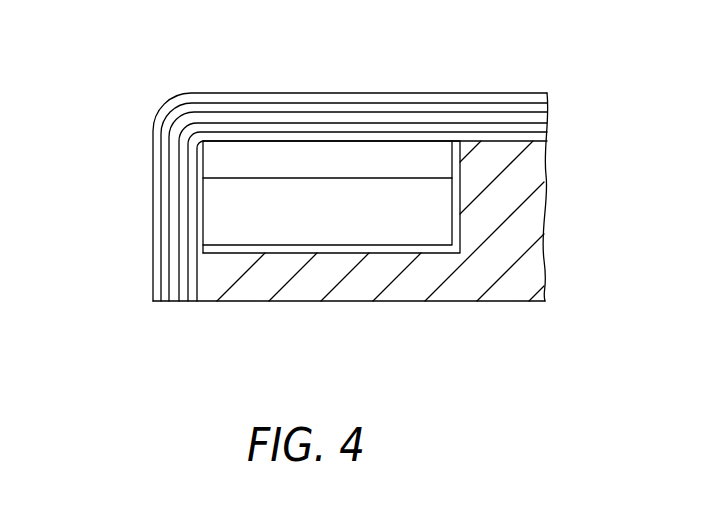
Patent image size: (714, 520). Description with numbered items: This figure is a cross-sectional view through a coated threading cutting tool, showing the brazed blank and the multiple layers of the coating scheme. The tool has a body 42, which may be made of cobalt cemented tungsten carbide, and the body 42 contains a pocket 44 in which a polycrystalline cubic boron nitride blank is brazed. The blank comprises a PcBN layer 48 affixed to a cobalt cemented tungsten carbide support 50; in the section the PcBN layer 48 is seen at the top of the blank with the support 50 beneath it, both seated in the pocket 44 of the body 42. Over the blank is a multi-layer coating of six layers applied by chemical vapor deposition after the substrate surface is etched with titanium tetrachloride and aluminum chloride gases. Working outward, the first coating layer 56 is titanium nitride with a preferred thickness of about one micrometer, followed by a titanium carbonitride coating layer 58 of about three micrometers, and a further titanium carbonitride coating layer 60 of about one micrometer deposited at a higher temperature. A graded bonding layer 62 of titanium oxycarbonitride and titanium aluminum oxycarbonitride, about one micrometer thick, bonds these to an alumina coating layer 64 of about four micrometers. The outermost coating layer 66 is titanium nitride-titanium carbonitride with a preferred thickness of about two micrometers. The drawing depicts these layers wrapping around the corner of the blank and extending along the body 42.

The body 42 is at (520, 173).
The pocket 44 is at (447, 165).
The PcBN layer 48 is at (343, 148).
The support 50 is at (403, 220).
The coating layer 56 is at (203, 187).
The coating layer 58 is at (195, 203).
The coating layer 60 is at (180, 222).
The bonding layer 62 is at (168, 197).
The coating layer 64 is at (165, 170).
The coating layer 66 is at (152, 135).